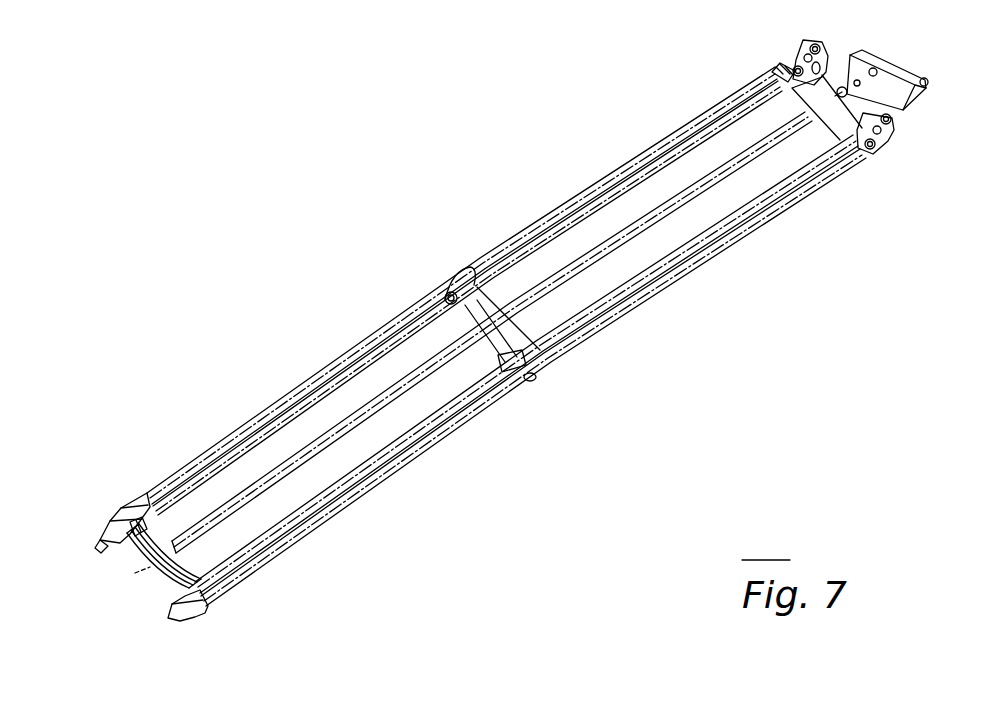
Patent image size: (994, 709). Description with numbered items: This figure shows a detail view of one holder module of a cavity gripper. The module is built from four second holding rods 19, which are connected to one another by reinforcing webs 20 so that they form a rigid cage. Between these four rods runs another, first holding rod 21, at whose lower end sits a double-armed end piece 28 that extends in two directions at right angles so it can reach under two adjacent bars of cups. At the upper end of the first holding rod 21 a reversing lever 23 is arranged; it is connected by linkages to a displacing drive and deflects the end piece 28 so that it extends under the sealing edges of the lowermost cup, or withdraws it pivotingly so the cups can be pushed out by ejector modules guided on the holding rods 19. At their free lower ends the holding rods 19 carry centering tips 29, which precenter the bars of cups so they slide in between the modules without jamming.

The second holding rods 19 is at (652, 304).
The reinforcing webs 20 is at (458, 252).
The first holding rod 21 is at (433, 390).
The reversing lever 23 is at (877, 105).
The double-armed end piece 28 is at (152, 536).
The centering tips 29 is at (100, 547).